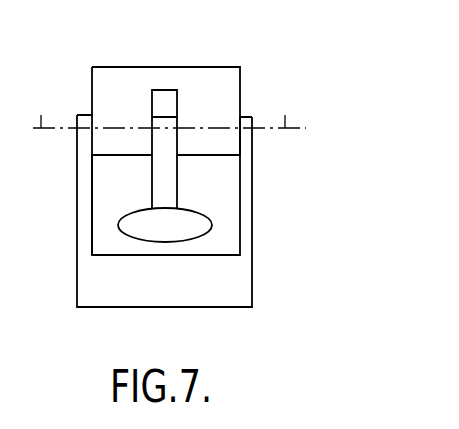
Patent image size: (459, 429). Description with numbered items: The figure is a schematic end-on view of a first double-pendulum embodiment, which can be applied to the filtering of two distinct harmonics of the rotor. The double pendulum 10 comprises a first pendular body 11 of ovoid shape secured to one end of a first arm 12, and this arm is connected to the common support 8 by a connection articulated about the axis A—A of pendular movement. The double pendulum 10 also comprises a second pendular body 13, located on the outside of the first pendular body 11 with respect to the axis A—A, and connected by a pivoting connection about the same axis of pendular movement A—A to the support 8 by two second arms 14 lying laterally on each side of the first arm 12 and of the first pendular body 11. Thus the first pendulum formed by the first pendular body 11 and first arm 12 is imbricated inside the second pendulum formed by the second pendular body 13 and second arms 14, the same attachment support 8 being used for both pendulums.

The common support 8 is at (177, 78).
The double pendulum 10 is at (169, 196).
The first pendular body 11 is at (177, 232).
The first arm 12 is at (163, 178).
The second pendular body 13 is at (143, 288).
The second arms 14 is at (88, 215).